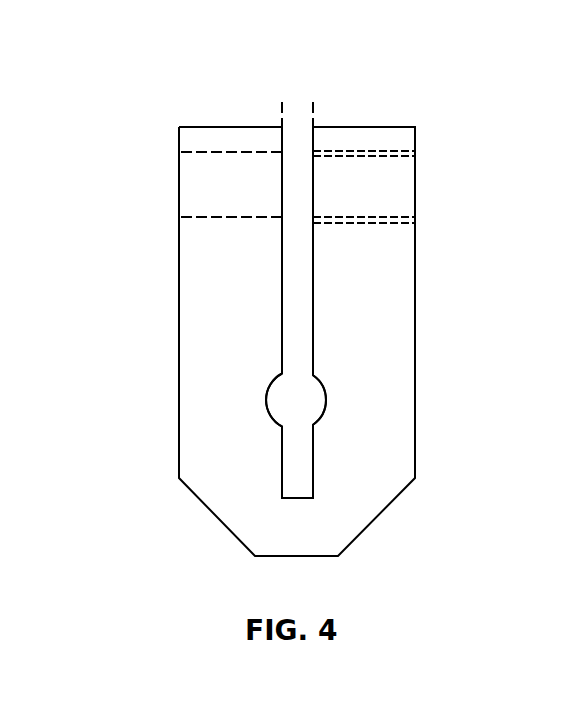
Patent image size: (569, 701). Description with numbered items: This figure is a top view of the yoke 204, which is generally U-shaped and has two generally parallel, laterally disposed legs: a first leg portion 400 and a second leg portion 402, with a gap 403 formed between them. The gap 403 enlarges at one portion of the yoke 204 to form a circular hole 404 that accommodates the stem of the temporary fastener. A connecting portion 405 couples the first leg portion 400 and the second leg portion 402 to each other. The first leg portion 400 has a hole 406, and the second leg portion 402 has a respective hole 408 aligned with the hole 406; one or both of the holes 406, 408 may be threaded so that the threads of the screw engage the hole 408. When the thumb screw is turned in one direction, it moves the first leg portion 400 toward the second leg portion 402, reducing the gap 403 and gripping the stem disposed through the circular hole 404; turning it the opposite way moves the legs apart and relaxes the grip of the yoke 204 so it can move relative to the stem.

The yoke 204 is at (191, 112).
The first leg portion 400 is at (178, 282).
The second leg portion 402 is at (415, 297).
The gap 403 is at (296, 122).
The circular hole 404 is at (304, 399).
The connecting portion 405 is at (309, 551).
The hole 406 is at (170, 176).
The hole 408 is at (426, 178).